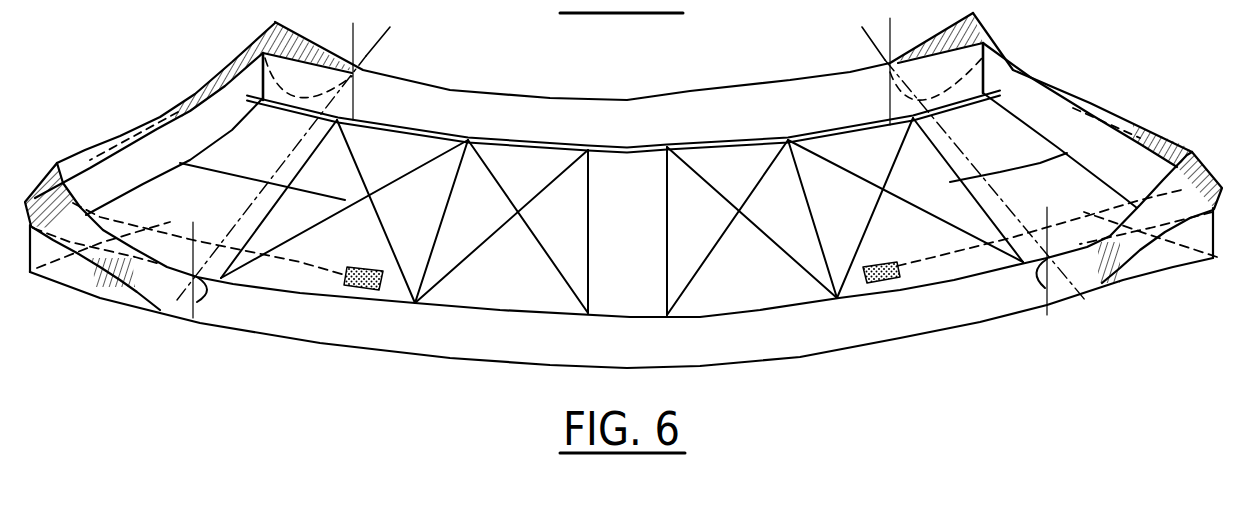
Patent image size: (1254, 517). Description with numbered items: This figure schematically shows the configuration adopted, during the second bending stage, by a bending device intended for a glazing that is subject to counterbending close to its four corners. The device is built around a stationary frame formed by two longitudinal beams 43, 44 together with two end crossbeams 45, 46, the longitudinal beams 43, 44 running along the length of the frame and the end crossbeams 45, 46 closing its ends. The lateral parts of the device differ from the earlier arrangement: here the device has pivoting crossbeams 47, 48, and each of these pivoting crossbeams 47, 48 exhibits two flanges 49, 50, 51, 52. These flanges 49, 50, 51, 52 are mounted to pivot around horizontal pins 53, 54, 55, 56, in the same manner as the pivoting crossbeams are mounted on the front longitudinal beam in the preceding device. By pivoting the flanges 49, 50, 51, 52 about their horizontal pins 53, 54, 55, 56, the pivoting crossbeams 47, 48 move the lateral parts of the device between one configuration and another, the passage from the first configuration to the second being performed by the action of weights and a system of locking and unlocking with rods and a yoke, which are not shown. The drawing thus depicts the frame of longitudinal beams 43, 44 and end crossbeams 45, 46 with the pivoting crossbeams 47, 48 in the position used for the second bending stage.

The longitudinal beam 43 is at (857, 327).
The longitudinal beam 44 is at (677, 113).
The end crossbeam 45 is at (172, 153).
The end crossbeam 46 is at (1047, 120).
The pivoting crossbeam 47 is at (80, 160).
The pivoting crossbeam 48 is at (1170, 147).
The flange 49 is at (140, 282).
The flange 50 is at (290, 33).
The flange 51 is at (1133, 253).
The flange 52 is at (953, 33).
The horizontal pin 53 is at (199, 301).
The horizontal pin 54 is at (360, 70).
The horizontal pin 55 is at (1045, 285).
The horizontal pin 56 is at (885, 68).